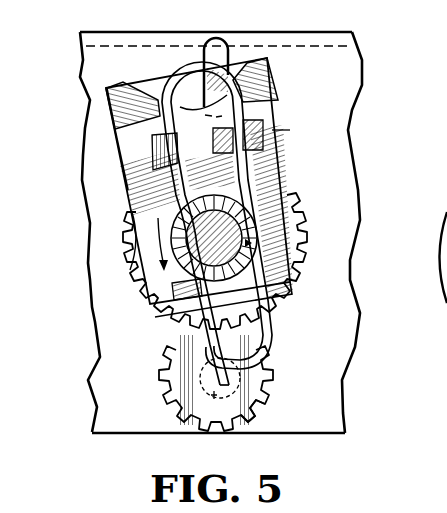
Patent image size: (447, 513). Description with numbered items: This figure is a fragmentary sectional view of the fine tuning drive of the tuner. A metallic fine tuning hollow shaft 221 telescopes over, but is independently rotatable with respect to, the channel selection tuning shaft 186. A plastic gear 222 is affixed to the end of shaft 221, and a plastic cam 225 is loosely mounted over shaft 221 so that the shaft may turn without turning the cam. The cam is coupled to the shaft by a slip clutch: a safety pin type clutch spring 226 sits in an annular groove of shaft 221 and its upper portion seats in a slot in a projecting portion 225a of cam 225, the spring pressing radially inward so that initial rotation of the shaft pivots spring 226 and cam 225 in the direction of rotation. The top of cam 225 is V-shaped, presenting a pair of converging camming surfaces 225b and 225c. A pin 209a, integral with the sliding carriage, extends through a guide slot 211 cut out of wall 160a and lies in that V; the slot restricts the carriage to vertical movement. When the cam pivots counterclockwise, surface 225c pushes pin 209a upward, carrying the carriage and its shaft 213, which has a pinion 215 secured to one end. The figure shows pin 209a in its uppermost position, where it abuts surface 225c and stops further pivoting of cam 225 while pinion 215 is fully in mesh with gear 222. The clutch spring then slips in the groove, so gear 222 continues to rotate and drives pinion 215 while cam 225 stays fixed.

The wall 160a is at (92, 62).
The cam 225 is at (280, 91).
The projecting portion 225a is at (290, 130).
The camming surface 225b is at (143, 97).
The camming surface 225c is at (283, 87).
The clutch spring 226 is at (112, 118).
The pin 209a is at (222, 40).
The guide slot 211 is at (230, 62).
The channel selection tuning shaft 186 is at (207, 236).
The fine tuning hollow shaft 221 is at (260, 220).
The gear 222 is at (306, 259).
The shaft 213 is at (195, 432).
The pinion 215 is at (284, 432).